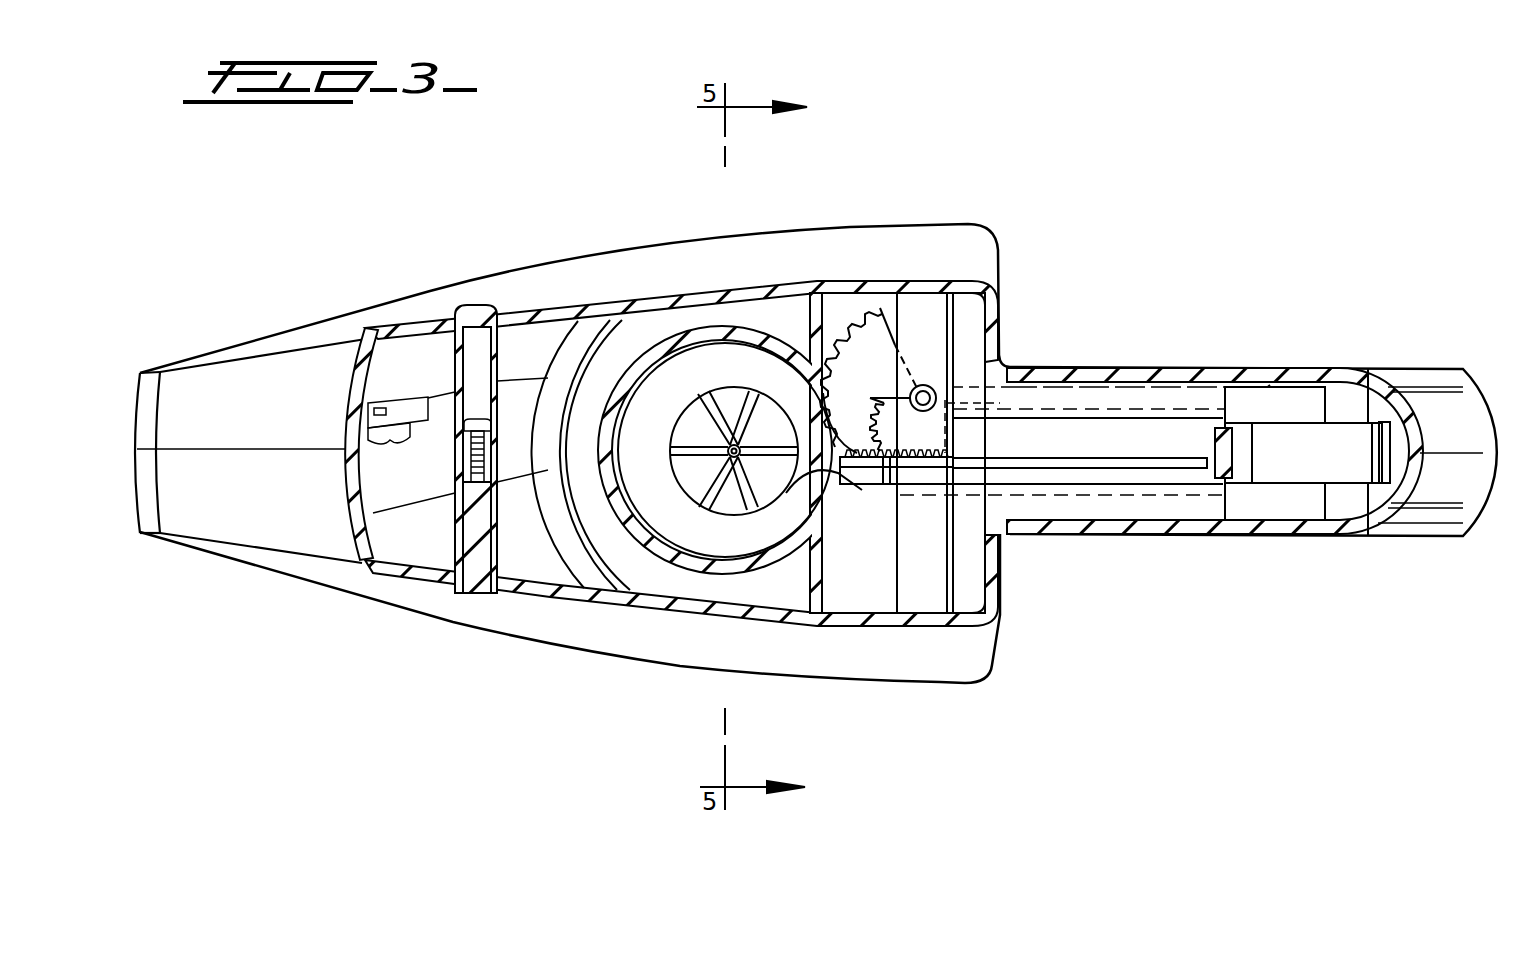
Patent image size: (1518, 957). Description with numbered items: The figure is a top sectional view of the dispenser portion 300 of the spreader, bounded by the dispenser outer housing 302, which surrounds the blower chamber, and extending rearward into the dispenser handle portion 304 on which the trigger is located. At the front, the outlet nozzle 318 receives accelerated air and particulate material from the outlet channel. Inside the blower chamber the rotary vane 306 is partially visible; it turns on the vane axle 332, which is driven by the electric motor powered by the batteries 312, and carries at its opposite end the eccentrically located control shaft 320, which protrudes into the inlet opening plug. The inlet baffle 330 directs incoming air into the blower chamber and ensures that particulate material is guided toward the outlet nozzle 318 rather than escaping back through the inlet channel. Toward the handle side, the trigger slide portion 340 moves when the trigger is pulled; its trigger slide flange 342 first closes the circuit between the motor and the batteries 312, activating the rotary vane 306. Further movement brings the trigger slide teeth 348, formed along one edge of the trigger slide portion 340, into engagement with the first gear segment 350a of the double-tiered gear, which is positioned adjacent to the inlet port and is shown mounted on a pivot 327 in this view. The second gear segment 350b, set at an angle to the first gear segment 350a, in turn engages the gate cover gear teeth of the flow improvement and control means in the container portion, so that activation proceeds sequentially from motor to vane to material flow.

The dispenser portion 300 is at (506, 252).
The dispenser outer housing 302 is at (995, 615).
The dispenser handle portion 304 is at (1350, 370).
The rotary vane 306 is at (705, 478).
The batteries 312 is at (725, 415).
The outlet nozzle 318 is at (705, 426).
The control shaft 320 is at (722, 451).
The pivot pin 327 is at (890, 320).
The inlet baffle 330 is at (737, 330).
The vane axle 332 is at (792, 394).
The trigger slide portion 340 is at (1060, 458).
The trigger slide flange 342 is at (817, 494).
The trigger slide teeth 348 is at (872, 450).
The first gear segment 350a is at (888, 460).
The second gear segment 350b is at (860, 345).